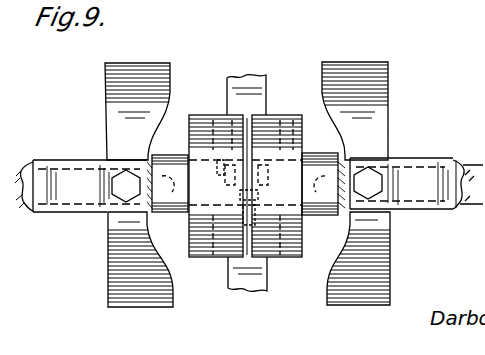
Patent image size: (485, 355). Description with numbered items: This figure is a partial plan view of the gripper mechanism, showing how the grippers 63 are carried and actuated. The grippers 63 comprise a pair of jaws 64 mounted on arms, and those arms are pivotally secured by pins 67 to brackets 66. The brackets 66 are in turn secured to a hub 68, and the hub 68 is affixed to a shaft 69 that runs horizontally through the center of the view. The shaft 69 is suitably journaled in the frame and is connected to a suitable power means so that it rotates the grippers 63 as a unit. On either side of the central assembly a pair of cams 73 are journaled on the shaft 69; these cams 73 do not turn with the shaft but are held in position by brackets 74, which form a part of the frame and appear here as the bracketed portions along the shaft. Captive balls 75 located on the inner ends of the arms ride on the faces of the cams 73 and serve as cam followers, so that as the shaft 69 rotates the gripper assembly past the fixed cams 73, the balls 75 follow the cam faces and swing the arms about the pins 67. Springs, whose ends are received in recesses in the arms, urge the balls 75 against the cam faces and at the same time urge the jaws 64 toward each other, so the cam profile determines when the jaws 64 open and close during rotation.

The grippers 63 is at (206, 111).
The jaws 64 is at (287, 115).
The brackets 66 is at (262, 92).
The pins 67 is at (270, 240).
The hub 68 is at (214, 128).
The shaft 69 is at (470, 208).
The cams 73 is at (135, 63).
The brackets 74 is at (62, 166).
The captive balls 75 is at (158, 178).